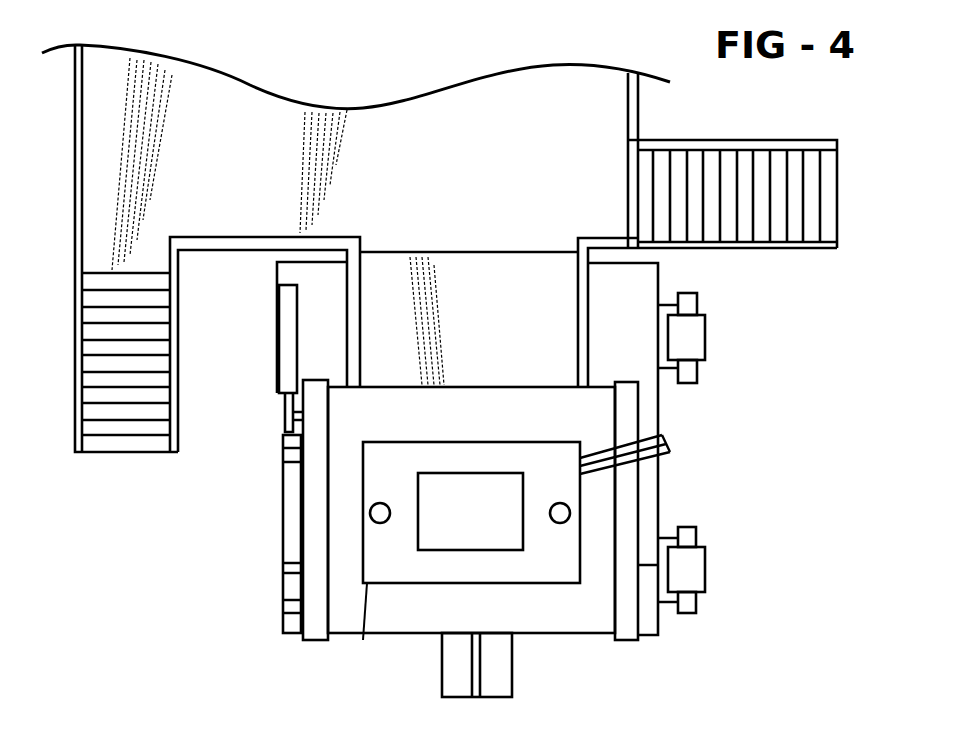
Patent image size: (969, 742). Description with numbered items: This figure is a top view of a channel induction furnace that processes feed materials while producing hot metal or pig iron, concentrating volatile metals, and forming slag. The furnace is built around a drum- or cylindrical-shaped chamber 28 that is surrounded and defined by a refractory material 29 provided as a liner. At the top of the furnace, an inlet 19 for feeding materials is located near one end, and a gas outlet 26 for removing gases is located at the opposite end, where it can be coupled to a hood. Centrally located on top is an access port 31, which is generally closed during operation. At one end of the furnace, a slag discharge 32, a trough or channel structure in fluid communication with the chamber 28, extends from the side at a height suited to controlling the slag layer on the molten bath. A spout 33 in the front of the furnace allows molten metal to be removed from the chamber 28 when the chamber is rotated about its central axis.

The inlet 19 is at (380, 503).
The gas outlet 26 is at (562, 523).
The drum-shaped chamber 28 is at (363, 640).
The refractory material 29 is at (557, 618).
The access port 31 is at (471, 495).
The slag discharge 32 is at (670, 467).
The spout 33 is at (477, 697).